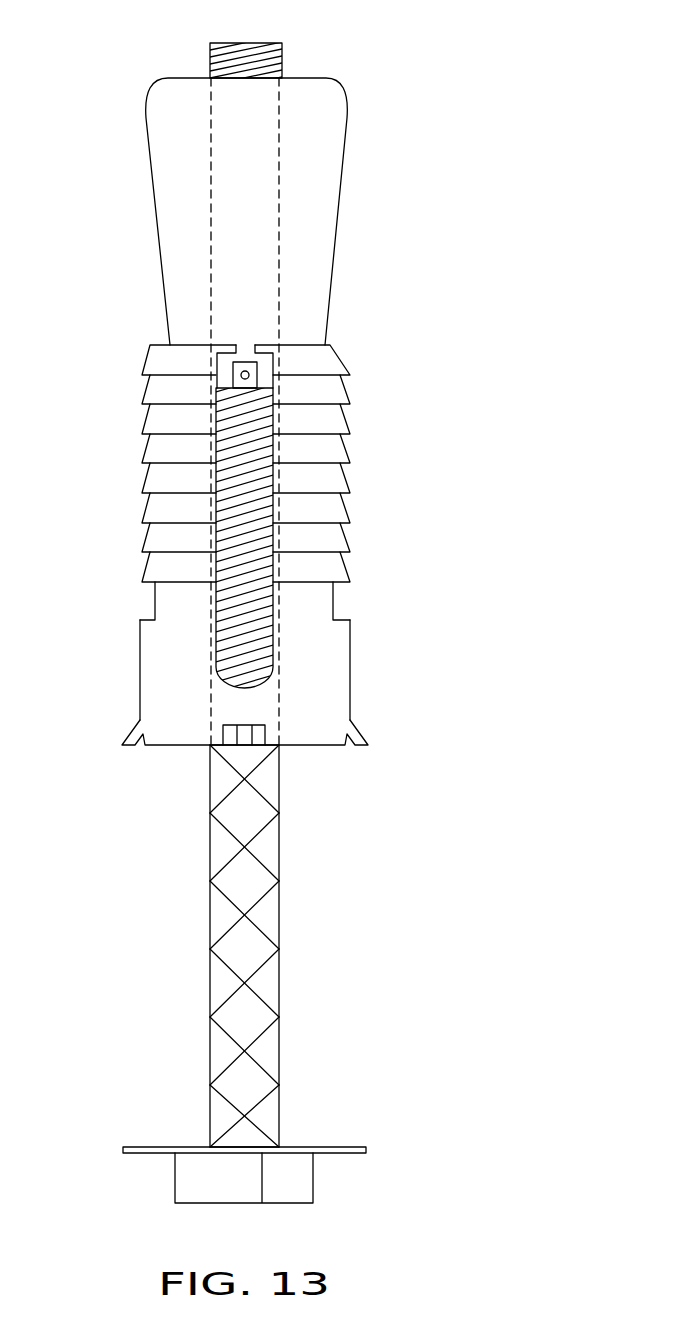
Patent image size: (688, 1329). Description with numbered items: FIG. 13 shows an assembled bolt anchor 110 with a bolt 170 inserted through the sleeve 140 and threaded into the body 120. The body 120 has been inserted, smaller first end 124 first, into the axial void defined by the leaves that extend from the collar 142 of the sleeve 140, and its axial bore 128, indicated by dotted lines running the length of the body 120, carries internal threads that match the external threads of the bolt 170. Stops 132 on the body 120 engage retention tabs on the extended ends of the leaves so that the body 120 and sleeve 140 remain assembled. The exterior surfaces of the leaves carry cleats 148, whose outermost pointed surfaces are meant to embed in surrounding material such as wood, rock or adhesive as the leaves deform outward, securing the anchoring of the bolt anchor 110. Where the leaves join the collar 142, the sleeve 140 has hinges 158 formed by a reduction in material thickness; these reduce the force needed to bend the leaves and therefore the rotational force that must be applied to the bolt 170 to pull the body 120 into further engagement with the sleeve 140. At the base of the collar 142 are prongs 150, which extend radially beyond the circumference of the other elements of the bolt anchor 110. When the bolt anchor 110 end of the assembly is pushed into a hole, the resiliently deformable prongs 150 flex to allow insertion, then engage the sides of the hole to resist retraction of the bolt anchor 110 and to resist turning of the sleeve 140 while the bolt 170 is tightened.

The bolt anchor 110 is at (457, 277).
The body 120 is at (270, 377).
The first end 124 is at (343, 88).
The axial bore 128 is at (207, 229).
The stops 132 is at (232, 373).
The sleeve 140 is at (262, 512).
The cleats 148 is at (145, 428).
The collar 142 is at (201, 677).
The prongs 150 is at (120, 743).
The hinges 158 is at (155, 602).
The bolt 170 is at (208, 930).